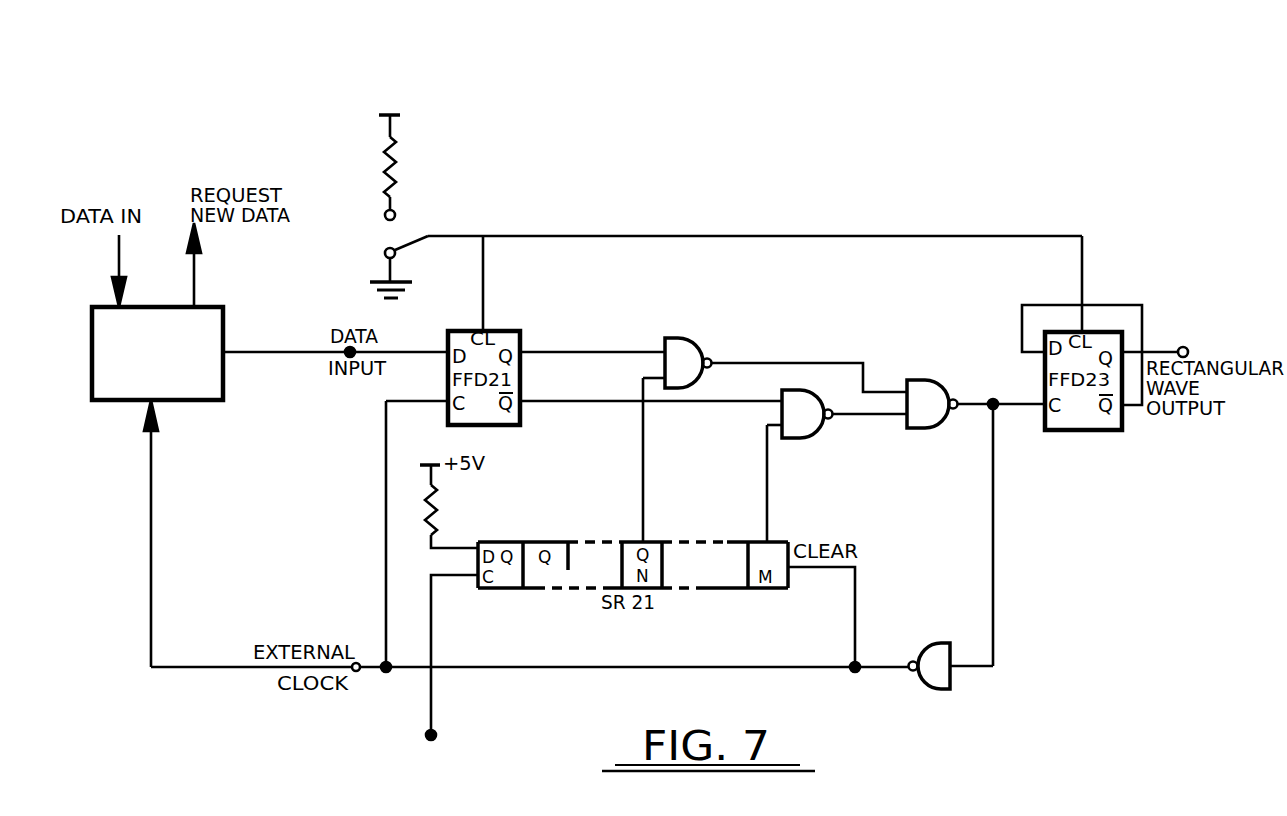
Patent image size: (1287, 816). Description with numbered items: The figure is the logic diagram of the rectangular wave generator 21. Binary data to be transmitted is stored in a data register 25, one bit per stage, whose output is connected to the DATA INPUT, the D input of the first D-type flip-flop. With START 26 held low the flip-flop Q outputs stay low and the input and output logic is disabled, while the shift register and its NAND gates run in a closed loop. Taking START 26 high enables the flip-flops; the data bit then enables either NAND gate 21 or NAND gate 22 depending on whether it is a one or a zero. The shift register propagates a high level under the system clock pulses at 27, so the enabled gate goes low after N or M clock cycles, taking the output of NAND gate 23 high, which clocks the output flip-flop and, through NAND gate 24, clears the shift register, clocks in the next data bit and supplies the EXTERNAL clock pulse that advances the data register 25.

The rectangular wave generator 21 is at (708, 333).
The NAND gate 22 is at (822, 383).
The NAND gate 23 is at (955, 373).
The NAND gate 24 is at (955, 640).
The data register 25 is at (213, 327).
The START 26 is at (376, 241).
The system clock pulses 27 is at (428, 738).